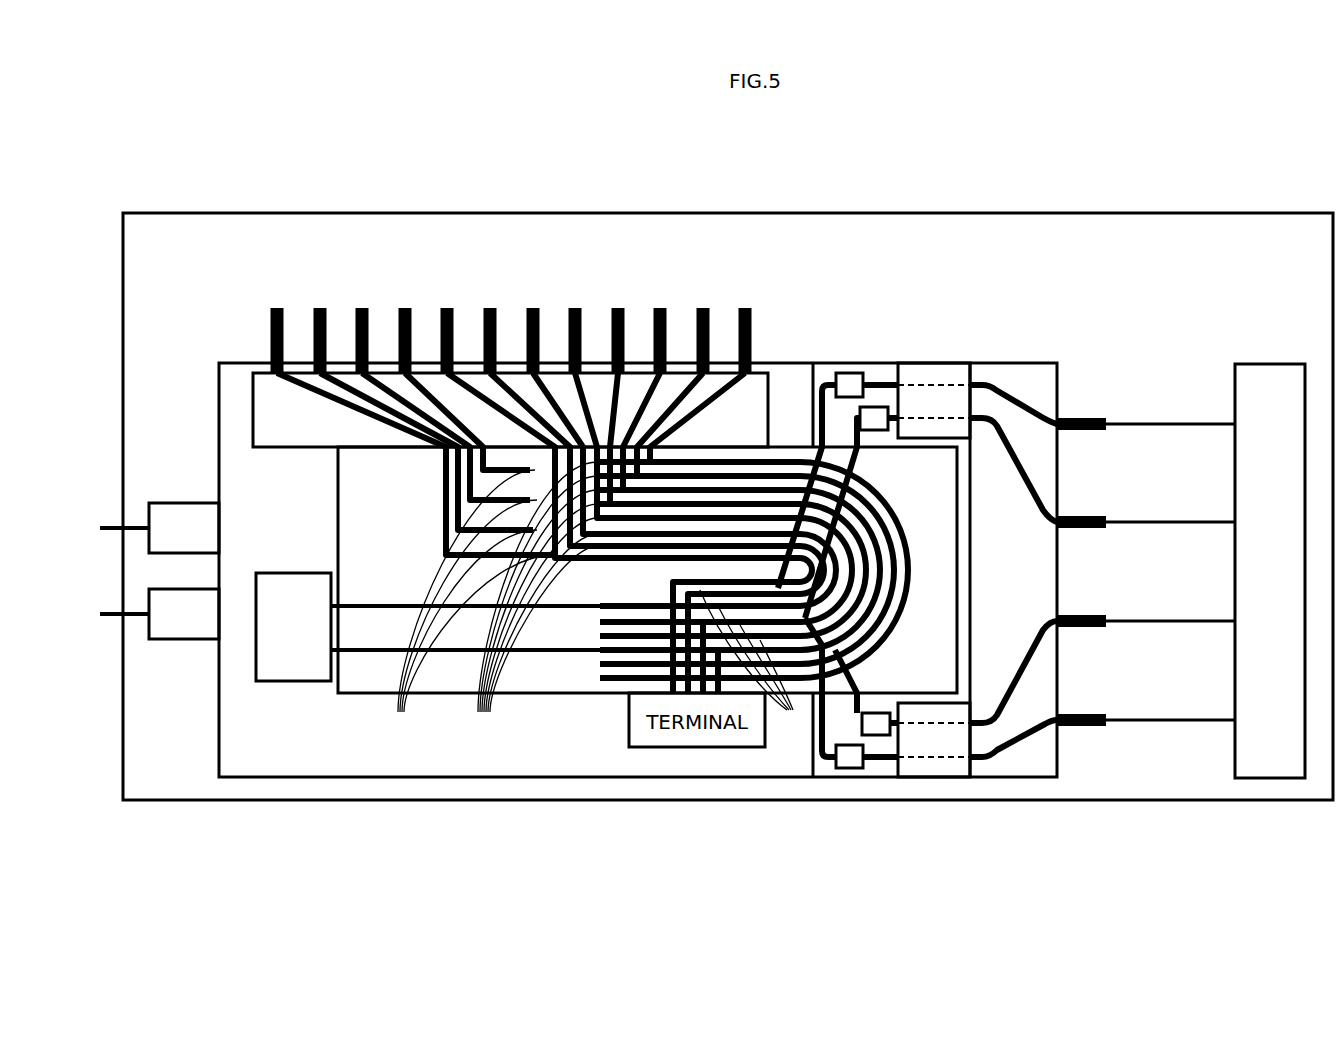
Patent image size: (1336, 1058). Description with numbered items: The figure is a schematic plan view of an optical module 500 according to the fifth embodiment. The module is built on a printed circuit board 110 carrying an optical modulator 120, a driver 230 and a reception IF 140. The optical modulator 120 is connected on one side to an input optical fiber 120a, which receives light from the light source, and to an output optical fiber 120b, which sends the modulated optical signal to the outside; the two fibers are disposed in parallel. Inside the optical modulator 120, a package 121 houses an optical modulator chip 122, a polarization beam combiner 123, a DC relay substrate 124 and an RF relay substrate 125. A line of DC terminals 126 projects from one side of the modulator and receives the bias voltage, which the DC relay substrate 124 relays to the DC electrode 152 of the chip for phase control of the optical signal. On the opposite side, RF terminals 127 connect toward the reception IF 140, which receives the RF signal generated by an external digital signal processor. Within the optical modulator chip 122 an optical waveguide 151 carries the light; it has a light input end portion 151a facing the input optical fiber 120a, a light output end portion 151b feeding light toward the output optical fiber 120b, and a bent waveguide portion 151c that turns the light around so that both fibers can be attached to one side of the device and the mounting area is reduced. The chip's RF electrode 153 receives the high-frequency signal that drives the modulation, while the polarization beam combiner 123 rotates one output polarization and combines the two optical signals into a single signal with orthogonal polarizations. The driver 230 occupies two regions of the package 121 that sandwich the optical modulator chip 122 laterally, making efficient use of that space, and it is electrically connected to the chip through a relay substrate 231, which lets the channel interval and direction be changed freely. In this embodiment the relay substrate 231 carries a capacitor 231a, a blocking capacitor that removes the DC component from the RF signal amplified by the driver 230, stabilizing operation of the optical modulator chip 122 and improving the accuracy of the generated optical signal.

The optical module 500 is at (1258, 168).
The printed circuit board 110 is at (1254, 213).
The optical modulator 120 is at (1055, 346).
The input optical fiber 120a is at (106, 542).
The output optical fiber 120b is at (106, 602).
The package 121 is at (681, 778).
The optical modulator chip 122 is at (563, 698).
The polarization beam combiner 123 is at (294, 681).
The DC relay substrate 124 is at (253, 410).
The RF relay substrate 125 is at (1007, 363).
The DC terminal 126 is at (277, 307).
The RF terminal 127 is at (1088, 720).
The reception IF 140 is at (1270, 364).
The optical waveguide 151 is at (446, 483).
The light input end portion 151a is at (446, 545).
The light output end portion 151b is at (338, 606).
The bent waveguide portion 151c is at (886, 488).
The DC electrode 152 is at (489, 612).
The RF electrode 153 is at (753, 668).
The driver 230 is at (936, 363).
The relay substrate 231 is at (826, 373).
The capacitor 231a is at (876, 407).